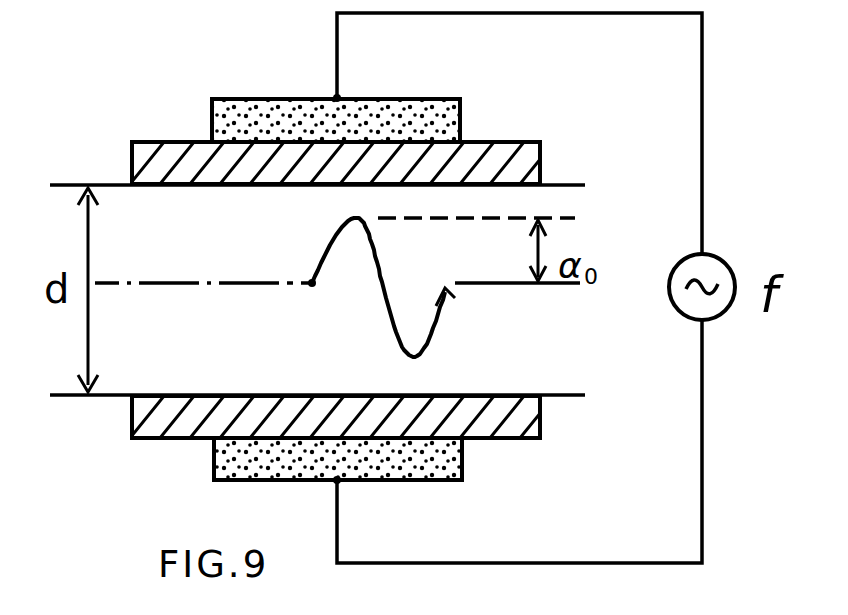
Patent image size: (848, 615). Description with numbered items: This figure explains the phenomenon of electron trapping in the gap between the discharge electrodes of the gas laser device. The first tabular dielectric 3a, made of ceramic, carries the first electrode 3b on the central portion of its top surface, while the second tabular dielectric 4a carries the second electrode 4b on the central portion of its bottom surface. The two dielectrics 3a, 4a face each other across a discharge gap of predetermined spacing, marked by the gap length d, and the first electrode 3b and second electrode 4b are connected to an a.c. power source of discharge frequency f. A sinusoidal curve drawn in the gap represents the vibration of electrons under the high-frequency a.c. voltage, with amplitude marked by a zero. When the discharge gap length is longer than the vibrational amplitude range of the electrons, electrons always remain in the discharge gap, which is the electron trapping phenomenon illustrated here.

The first tabular dielectric 3a is at (541, 158).
The first electrode 3b is at (423, 97).
The second tabular dielectric 4a is at (541, 420).
The second electrode 4b is at (462, 468).